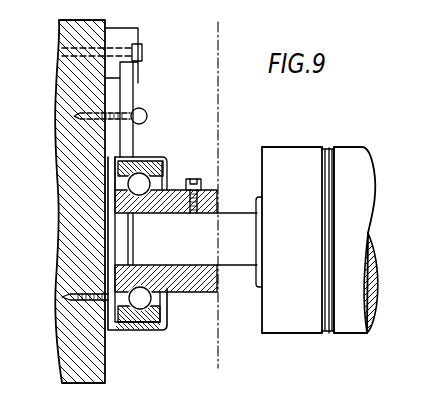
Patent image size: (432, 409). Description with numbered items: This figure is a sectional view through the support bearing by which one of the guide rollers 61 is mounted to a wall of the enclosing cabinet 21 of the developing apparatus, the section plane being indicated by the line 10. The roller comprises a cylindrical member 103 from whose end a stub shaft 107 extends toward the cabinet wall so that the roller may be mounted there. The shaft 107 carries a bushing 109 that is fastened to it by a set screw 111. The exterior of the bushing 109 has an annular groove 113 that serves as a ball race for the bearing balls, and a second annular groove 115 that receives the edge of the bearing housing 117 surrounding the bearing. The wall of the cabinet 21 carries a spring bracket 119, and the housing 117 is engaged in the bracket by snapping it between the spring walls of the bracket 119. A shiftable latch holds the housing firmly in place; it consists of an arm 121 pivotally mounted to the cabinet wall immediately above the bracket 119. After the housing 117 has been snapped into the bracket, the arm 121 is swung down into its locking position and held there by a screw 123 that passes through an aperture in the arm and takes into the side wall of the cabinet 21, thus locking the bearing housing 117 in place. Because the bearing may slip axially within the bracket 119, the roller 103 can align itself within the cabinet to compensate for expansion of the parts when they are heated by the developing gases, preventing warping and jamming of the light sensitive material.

The section line 10- 10 is at (200, 359).
The enclosing cabinet 21 is at (88, 363).
The guide rollers 61 is at (382, 294).
The cylindrical member 103 is at (362, 205).
The stub shaft 107 is at (233, 222).
The bushing 109 is at (217, 292).
The set screw 111 is at (188, 178).
The annular groove 113 is at (143, 203).
The second annular groove 115 is at (178, 258).
The bearing housing 117 is at (168, 318).
The spring bracket 119 is at (133, 332).
The arm 121 is at (140, 87).
The screw 123 is at (148, 111).